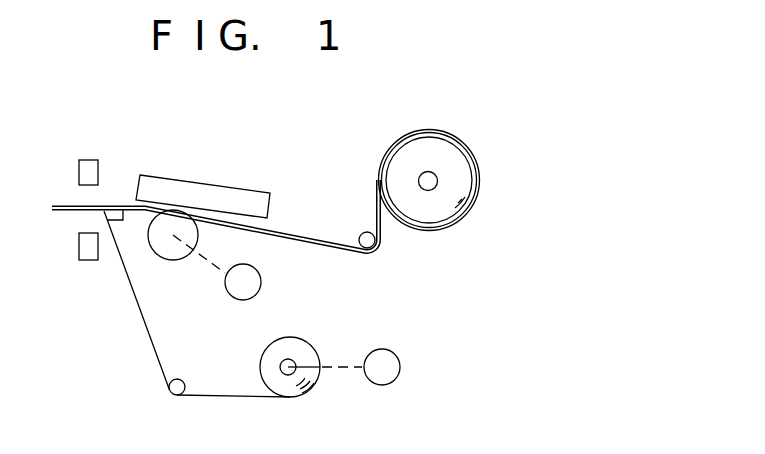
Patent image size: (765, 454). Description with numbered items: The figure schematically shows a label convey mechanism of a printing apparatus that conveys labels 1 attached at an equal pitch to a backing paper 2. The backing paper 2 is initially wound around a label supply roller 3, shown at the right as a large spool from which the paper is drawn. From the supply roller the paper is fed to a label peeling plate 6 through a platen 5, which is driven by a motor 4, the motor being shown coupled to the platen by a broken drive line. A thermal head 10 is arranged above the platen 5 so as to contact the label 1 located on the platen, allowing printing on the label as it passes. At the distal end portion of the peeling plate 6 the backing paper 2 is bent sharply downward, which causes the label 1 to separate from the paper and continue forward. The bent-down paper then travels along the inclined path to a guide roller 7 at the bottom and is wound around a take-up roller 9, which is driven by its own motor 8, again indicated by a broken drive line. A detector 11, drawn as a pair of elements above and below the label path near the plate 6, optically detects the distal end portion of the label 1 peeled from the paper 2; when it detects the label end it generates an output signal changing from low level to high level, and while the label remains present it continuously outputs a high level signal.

The label 1 is at (60, 206).
The backing paper 2 is at (148, 348).
The label supply roller 3 is at (427, 208).
The motor 4 is at (262, 280).
The platen 5 is at (168, 248).
The label peeling plate 6 is at (108, 210).
The guide roller 7 is at (176, 379).
The motor 8 is at (390, 350).
The take-up roller 9 is at (298, 350).
The thermal head 10 is at (197, 195).
The detector 11 is at (88, 160).